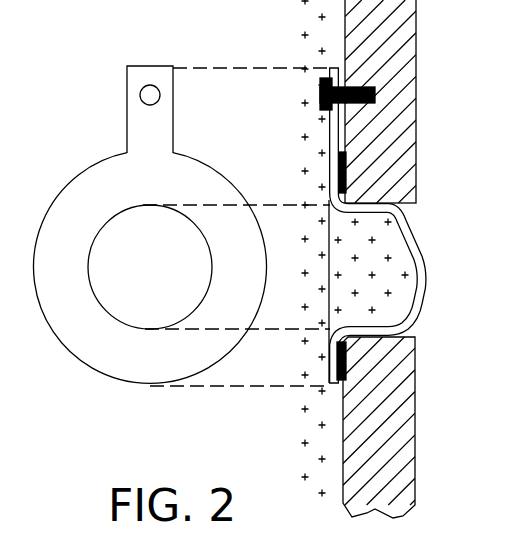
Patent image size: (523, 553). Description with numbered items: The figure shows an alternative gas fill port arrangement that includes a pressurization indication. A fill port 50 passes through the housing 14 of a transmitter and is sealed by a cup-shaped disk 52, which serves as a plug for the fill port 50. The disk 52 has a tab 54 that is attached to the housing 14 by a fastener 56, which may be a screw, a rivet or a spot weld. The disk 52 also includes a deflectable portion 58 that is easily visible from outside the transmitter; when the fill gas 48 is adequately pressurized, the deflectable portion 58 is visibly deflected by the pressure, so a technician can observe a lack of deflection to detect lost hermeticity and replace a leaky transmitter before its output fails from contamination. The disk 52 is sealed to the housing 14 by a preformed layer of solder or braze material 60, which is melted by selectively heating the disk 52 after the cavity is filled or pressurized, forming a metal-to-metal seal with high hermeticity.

The housing 14 is at (415, 72).
The fill gas 48 is at (341, 53).
The fill port 50 is at (416, 206).
The cup-shaped disk 52 is at (116, 335).
The tab 54 is at (150, 117).
The fastener 56 is at (320, 92).
The deflectable portion 58 is at (422, 287).
The solder or braze material 60 is at (346, 170).